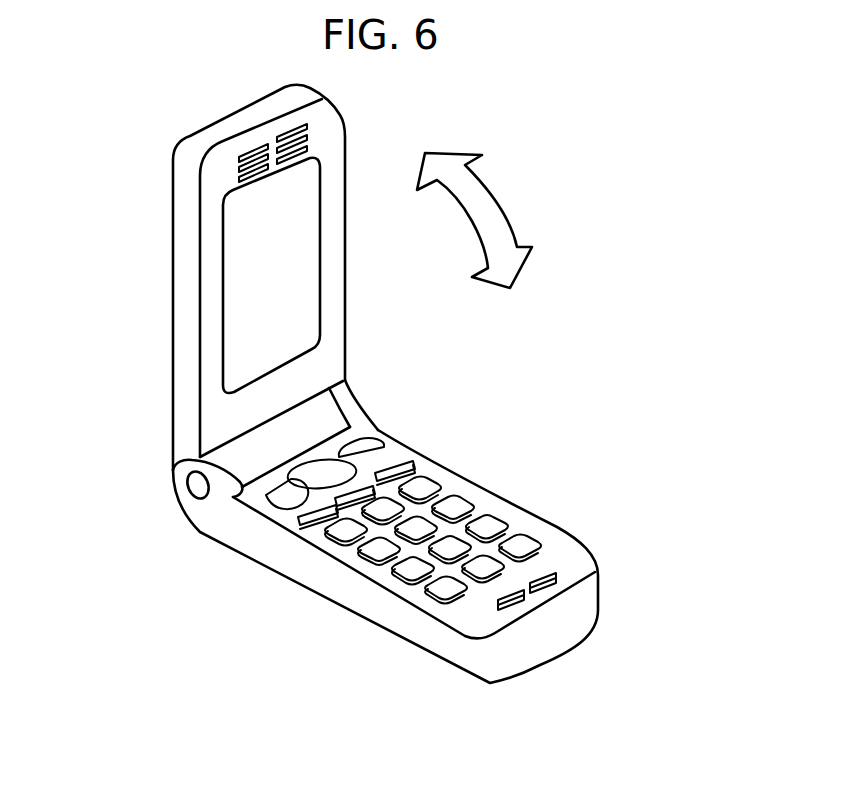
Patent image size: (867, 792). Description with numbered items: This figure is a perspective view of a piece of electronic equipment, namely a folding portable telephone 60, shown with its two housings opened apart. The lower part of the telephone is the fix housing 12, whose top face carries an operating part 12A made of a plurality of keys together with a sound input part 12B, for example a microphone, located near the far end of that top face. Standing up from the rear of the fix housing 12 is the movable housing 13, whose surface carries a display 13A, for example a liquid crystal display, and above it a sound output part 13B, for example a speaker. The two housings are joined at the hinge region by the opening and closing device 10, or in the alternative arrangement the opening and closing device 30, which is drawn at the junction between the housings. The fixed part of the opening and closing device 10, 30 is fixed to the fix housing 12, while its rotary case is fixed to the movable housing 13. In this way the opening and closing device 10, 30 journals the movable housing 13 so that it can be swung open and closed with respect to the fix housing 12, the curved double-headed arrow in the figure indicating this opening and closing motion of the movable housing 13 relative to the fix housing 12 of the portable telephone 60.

The portable telephone 60 is at (656, 187).
The movable housing 13 is at (187, 272).
The display 13A is at (238, 340).
The sound output part 13B is at (243, 152).
The opening and closing device 10 is at (355, 424).
The opening and closing device 30 is at (330, 413).
The fix housing 12 is at (363, 603).
The operating part 12A is at (513, 517).
The sound input part 12B is at (553, 573).